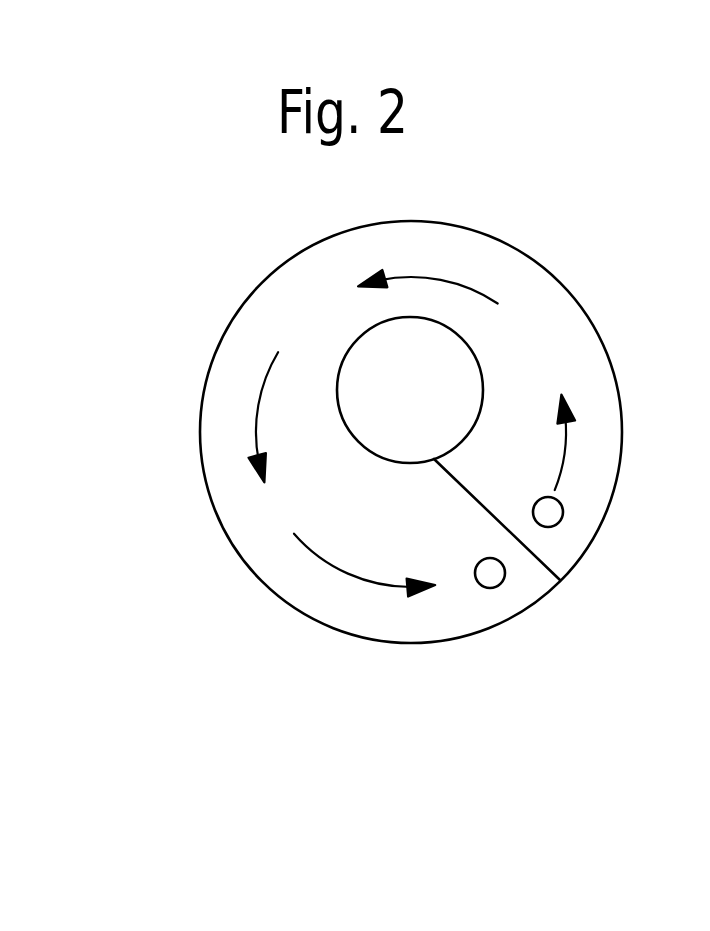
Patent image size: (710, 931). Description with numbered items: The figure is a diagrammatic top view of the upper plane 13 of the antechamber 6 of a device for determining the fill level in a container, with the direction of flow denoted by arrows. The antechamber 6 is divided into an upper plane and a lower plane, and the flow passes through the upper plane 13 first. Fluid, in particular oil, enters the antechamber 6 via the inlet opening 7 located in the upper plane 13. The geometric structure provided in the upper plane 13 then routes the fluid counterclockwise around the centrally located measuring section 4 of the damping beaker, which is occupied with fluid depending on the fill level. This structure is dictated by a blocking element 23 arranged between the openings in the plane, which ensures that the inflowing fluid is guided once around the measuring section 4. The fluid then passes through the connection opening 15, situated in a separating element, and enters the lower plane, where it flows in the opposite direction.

The upper plane 13 is at (223, 548).
The measuring section 4 is at (353, 380).
The antechamber 6 is at (525, 348).
The blocking element 23 is at (467, 482).
The inlet opening 7 is at (550, 513).
The connection opening 15 is at (490, 575).